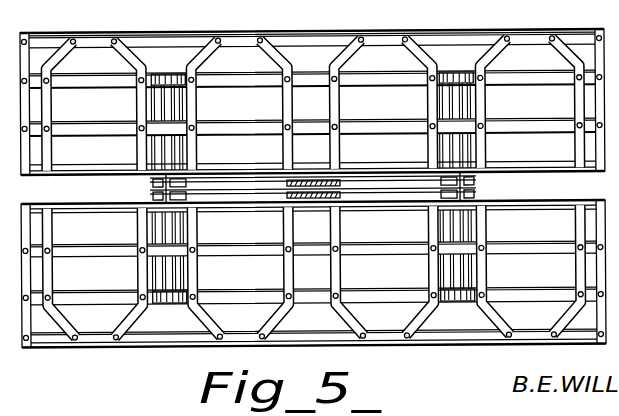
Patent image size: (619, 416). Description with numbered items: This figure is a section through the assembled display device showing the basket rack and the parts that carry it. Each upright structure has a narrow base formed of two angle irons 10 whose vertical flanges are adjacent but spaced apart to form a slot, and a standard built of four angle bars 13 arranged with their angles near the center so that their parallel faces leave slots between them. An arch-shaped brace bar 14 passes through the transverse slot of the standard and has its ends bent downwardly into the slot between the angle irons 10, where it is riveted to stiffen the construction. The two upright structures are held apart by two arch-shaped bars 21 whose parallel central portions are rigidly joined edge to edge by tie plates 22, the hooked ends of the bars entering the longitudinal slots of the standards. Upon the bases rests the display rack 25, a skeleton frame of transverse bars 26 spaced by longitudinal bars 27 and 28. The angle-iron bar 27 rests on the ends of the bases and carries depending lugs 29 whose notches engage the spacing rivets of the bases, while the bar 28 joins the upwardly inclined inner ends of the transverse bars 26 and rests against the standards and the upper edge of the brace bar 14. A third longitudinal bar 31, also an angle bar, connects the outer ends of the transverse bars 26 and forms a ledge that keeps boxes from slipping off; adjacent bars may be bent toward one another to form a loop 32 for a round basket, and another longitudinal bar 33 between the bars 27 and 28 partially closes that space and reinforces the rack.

The angle irons 10 is at (160, 270).
The angle bars 13 is at (152, 182).
The brace bar 14 is at (170, 223).
The arch shaped bars 21 is at (373, 188).
The tie plates 22 is at (307, 180).
The display rack 25 is at (382, 186).
The transverse bars 26 is at (262, 225).
The longitudinal bar 27 is at (223, 82).
The longitudinal bar 28 is at (258, 172).
The depending lugs 29 is at (170, 69).
The third longitudinal bar 31 is at (238, 4).
The loop 32 is at (277, 53).
The longitudinal bar 33 is at (213, 136).